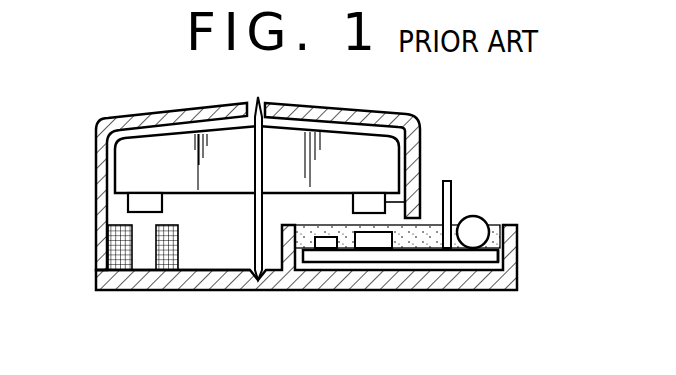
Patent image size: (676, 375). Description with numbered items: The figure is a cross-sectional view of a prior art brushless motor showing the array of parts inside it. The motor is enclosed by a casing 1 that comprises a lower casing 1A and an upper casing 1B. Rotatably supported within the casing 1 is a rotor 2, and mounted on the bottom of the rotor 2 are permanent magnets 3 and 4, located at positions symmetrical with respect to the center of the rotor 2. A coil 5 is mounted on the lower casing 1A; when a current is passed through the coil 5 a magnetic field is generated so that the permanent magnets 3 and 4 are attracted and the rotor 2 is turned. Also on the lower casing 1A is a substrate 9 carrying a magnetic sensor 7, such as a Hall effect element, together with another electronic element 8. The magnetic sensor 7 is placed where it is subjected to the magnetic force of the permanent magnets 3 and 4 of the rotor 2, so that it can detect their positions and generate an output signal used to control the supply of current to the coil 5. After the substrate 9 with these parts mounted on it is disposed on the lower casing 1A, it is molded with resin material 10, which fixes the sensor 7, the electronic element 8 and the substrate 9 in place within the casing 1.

The casing 1 is at (117, 297).
The lower casing 1A is at (204, 278).
The upper casing 1B is at (380, 113).
The rotor 2 is at (122, 165).
The permanent magnet 3 is at (129, 205).
The permanent magnet 4 is at (419, 199).
The coil 5 is at (108, 250).
The magnetic sensor 7 is at (374, 250).
The electronic element 8 is at (328, 249).
The substrate 9 is at (507, 254).
The resin material 10 is at (418, 250).